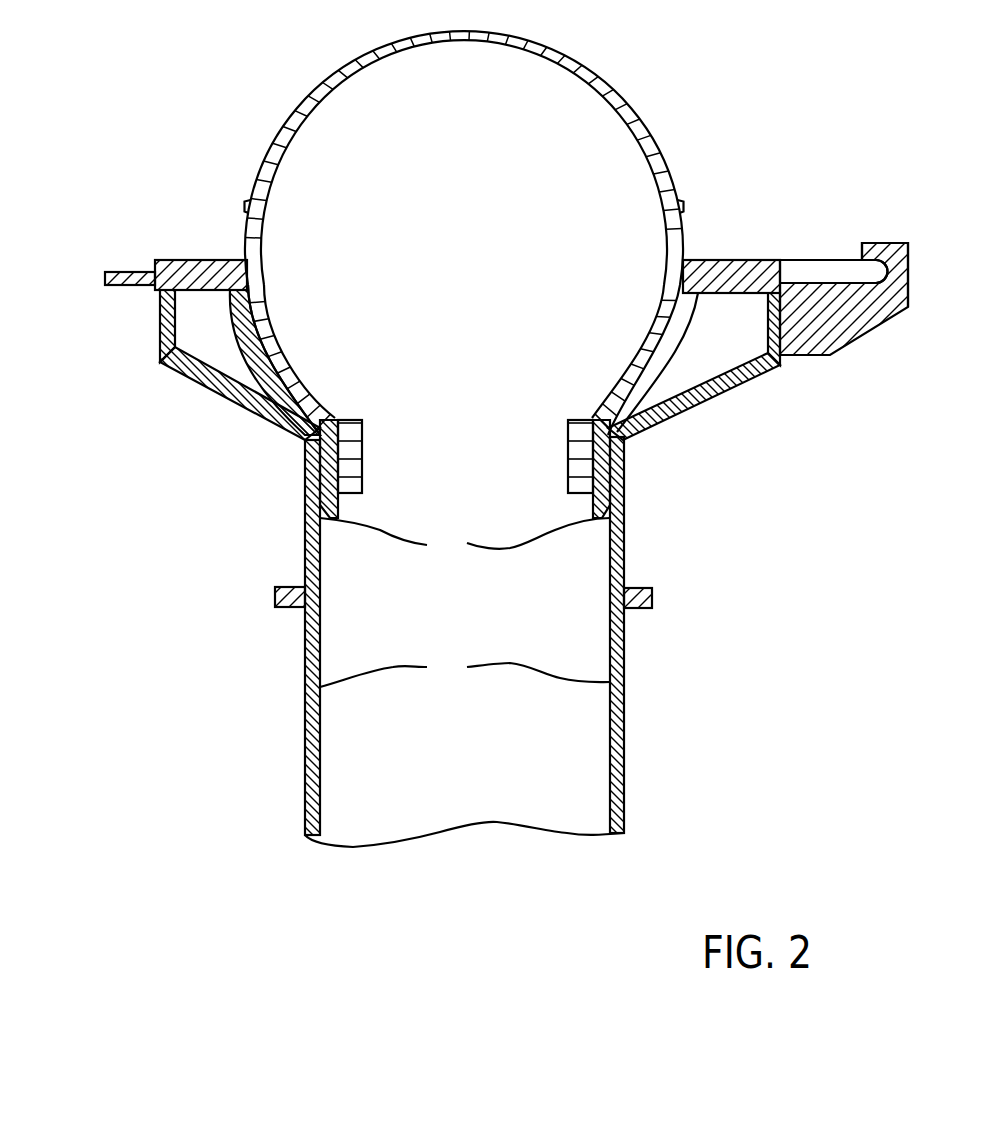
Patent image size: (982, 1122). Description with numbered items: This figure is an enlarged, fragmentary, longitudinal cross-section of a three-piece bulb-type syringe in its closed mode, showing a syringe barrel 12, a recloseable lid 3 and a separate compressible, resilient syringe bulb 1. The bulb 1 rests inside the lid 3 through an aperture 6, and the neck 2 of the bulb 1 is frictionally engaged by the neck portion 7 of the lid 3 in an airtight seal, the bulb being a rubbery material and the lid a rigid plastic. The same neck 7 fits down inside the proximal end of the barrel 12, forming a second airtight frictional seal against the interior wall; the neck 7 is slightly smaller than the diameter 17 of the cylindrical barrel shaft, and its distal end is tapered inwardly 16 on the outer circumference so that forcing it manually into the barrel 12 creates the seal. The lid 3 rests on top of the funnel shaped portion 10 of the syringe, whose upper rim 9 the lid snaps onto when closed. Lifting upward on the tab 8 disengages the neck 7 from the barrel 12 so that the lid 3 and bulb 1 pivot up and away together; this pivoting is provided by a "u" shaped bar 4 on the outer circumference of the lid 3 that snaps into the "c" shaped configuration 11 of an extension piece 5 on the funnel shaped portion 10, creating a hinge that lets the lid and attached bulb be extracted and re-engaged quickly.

The syringe bulb 1 is at (275, 137).
The neck of the bulb 2 is at (568, 457).
The recloseable lid 3 is at (192, 260).
The "u" shaped bar 4 is at (822, 258).
The extension piece 5 is at (847, 355).
The aperture 6 is at (263, 380).
The neck portion of the lid 7 is at (320, 447).
The tab 8 is at (104, 278).
The upper rim 9 is at (157, 293).
The funnel shaped portion 10 is at (200, 383).
The "c" shaped configuration 11 is at (897, 318).
The syringe barrel 12 is at (304, 683).
The inward taper 16 is at (465, 539).
The diameter of the barrel 17 is at (465, 669).